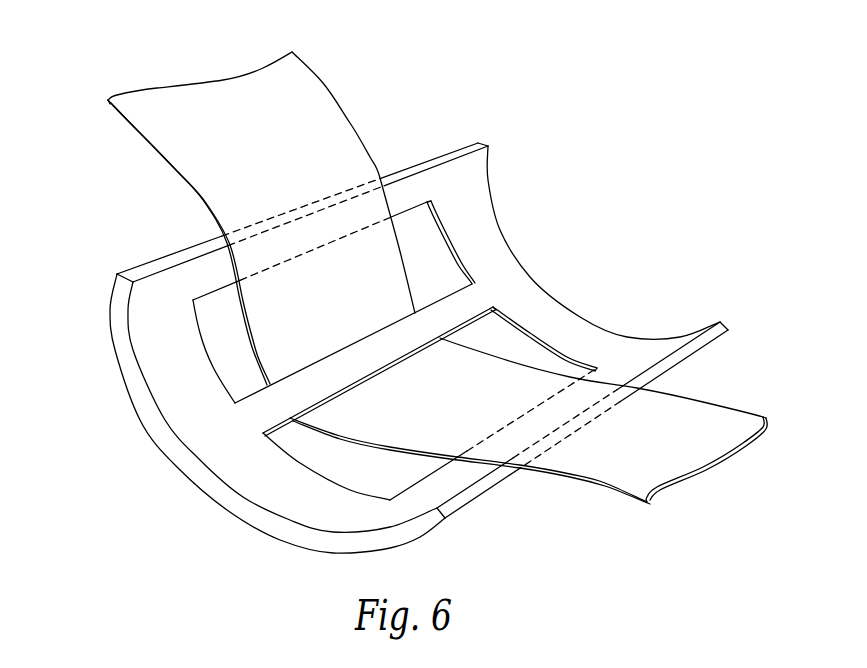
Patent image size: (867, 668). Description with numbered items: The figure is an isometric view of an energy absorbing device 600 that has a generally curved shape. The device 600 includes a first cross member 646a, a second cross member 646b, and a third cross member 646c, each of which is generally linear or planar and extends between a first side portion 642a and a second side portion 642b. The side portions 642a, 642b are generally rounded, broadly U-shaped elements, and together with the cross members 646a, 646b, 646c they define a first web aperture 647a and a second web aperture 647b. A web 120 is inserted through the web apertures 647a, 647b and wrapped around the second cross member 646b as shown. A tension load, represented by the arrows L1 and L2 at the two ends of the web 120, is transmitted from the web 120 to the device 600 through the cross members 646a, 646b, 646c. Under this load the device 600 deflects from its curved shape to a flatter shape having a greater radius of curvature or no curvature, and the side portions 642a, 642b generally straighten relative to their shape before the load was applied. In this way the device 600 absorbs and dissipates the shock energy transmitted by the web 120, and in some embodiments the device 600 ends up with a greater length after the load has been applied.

The energy absorbing device 600 is at (125, 350).
The web 120 is at (342, 130).
The first side portion 642a is at (188, 423).
The second side portion 642b is at (483, 240).
The first cross member 646a is at (205, 284).
The second cross member 646b is at (300, 399).
The third cross member 646c is at (453, 473).
The first web aperture 647a is at (422, 249).
The second web aperture 647b is at (514, 346).
The tension load arrow L1 is at (197, 70).
The tension load arrow L2 is at (733, 458).